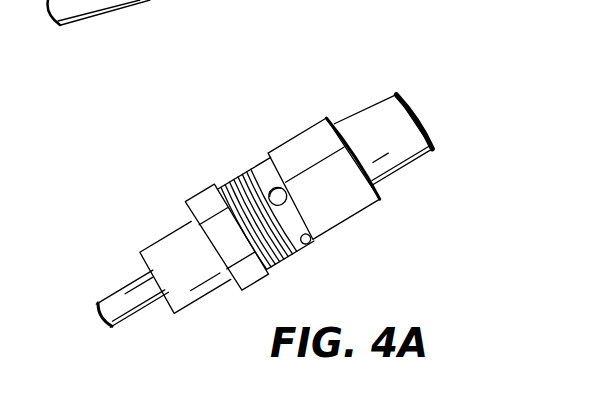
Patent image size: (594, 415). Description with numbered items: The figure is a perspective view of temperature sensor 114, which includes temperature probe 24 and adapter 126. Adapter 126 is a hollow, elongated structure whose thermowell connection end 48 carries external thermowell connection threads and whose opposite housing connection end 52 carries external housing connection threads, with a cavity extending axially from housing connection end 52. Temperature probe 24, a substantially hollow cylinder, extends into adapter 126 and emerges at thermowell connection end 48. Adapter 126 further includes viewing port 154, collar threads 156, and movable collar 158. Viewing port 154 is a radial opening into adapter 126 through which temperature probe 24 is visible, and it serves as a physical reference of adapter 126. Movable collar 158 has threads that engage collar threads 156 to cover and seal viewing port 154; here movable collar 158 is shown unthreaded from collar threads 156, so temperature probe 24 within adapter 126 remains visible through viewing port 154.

The temperature sensor 114 is at (309, 192).
The temperature probe 24 is at (123, 295).
The thermowell connection end 48 is at (162, 312).
The collar threads 156 is at (232, 190).
The viewing port 154 is at (264, 184).
The movable collar 158 is at (298, 133).
The adapter 126 is at (357, 106).
The housing connection end 52 is at (431, 135).